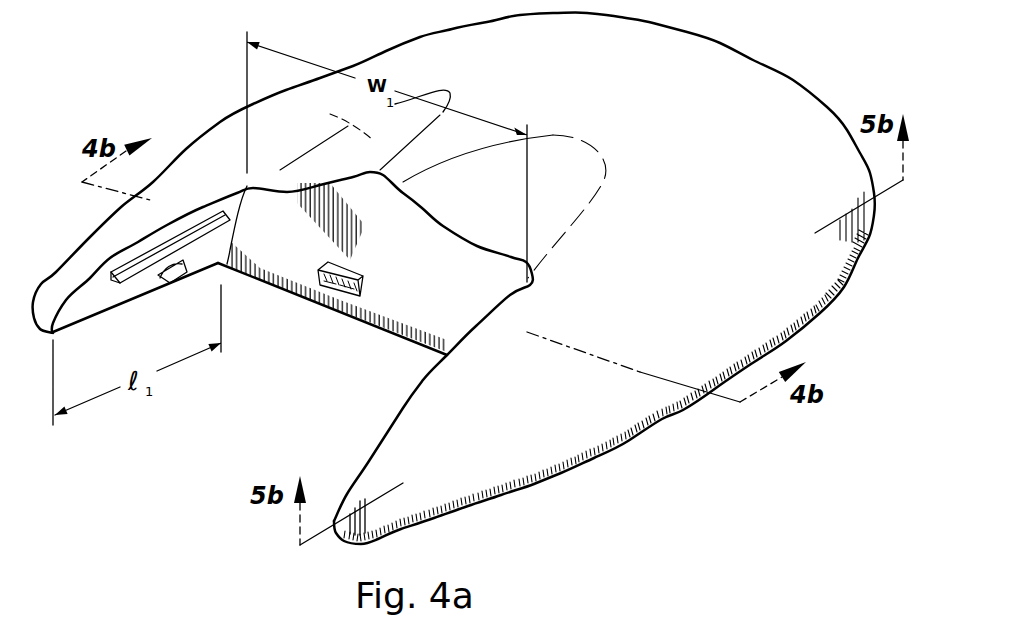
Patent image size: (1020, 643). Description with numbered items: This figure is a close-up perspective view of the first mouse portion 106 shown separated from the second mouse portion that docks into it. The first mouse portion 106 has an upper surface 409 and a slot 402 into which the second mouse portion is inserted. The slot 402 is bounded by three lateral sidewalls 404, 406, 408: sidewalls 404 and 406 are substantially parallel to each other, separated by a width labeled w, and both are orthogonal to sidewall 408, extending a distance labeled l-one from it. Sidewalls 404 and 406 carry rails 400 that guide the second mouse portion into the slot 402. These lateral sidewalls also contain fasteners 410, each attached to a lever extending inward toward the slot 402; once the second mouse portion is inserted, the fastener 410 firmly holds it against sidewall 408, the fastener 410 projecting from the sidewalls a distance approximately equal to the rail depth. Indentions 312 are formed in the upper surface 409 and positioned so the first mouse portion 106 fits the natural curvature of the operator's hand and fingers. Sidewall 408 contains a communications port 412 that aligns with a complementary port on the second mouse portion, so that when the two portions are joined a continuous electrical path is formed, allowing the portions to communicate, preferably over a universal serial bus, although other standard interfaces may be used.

The first mouse portion 106 is at (823, 313).
The indentions 312 is at (340, 122).
The rails 400 is at (187, 237).
The slot 402 is at (278, 414).
The sidewall 404 is at (88, 305).
The sidewall 406 is at (378, 433).
The sidewall 408 is at (418, 236).
The upper surface 409 is at (562, 76).
The fastener 410 is at (158, 283).
The communications port 412 is at (333, 293).